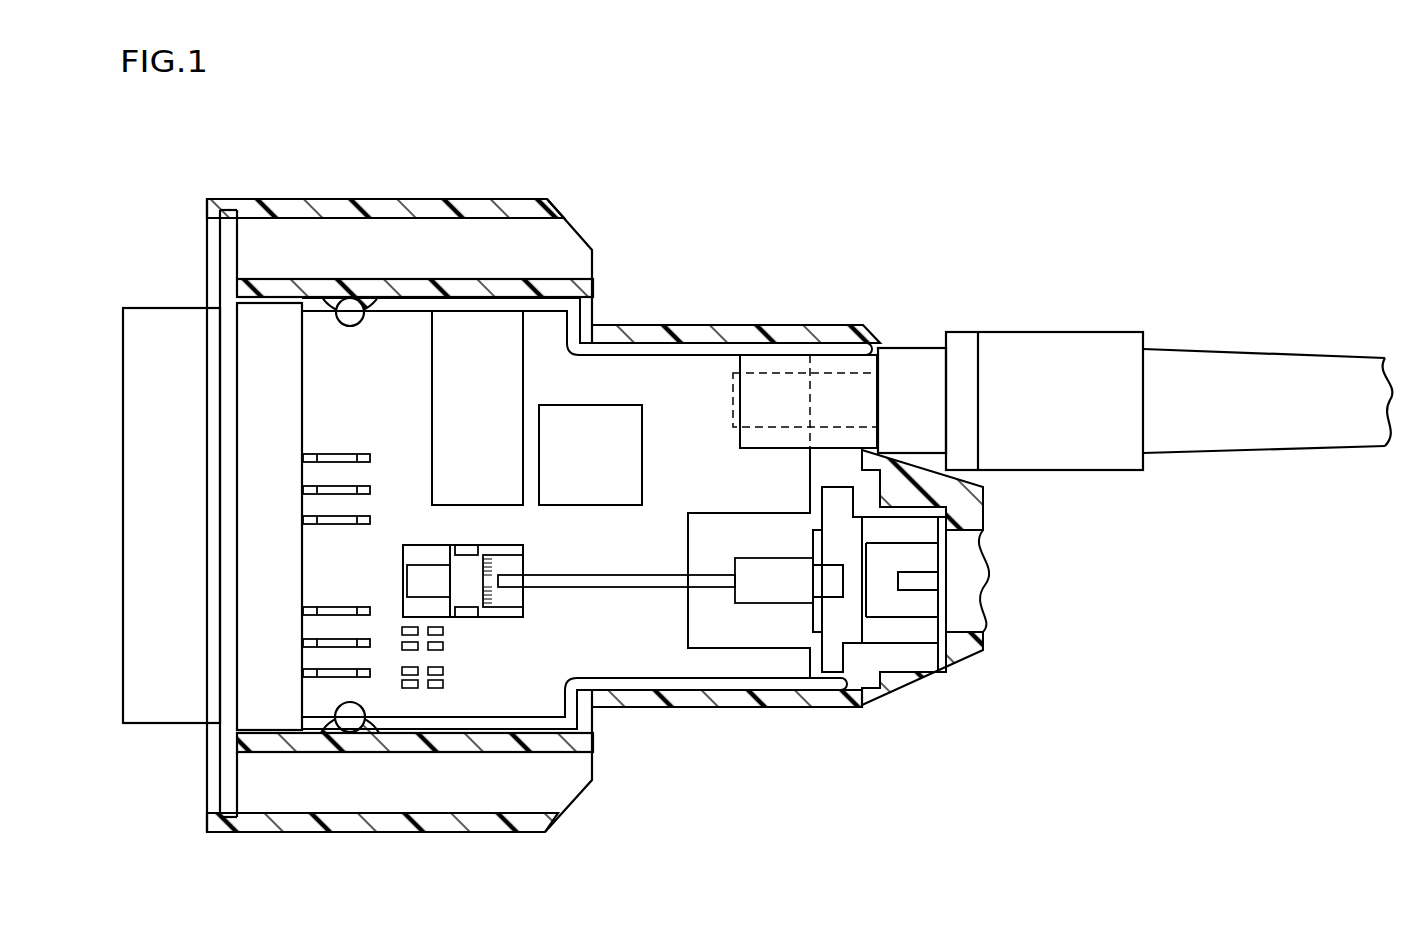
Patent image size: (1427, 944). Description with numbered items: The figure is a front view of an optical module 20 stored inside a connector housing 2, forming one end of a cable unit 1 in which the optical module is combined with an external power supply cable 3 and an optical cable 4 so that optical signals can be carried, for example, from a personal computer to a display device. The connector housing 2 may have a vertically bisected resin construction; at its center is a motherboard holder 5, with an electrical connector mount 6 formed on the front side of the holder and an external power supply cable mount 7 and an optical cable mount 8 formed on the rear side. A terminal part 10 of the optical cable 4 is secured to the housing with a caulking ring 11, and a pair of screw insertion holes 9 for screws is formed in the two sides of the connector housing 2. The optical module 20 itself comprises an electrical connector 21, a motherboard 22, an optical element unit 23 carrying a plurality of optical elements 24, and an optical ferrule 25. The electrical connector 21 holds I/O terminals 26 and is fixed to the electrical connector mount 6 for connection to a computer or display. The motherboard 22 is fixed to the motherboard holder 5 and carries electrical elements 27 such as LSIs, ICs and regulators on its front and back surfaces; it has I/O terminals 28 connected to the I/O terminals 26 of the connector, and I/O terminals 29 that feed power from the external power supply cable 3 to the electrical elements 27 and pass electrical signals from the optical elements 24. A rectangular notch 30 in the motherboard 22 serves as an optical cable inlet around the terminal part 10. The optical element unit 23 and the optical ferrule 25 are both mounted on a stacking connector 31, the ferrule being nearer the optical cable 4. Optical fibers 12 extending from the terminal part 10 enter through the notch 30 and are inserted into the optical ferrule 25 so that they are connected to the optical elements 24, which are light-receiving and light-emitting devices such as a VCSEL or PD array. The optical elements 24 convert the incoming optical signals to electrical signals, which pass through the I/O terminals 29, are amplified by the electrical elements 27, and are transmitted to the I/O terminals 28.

The cable unit 1 is at (836, 190).
The connector housing 2 is at (282, 215).
The external power supply cable 3 is at (1080, 331).
The optical cable 4 is at (965, 622).
The motherboard holder 5 is at (540, 302).
The electrical connector mount 6 is at (215, 226).
The external power supply cable mount 7 is at (880, 352).
The optical cable mount 8 is at (918, 627).
The screw insertion holes 9 is at (456, 225).
The terminal part 10 is at (765, 557).
The caulking ring 11 is at (838, 638).
The optical fibers 12 is at (577, 574).
The optical module 20 is at (643, 534).
The electrical connector 21 is at (150, 306).
The motherboard 22 is at (640, 338).
The optical element unit 23 is at (398, 534).
The optical elements 24 is at (415, 580).
The optical ferrule 25 is at (487, 548).
The I/O terminals 26 is at (305, 458).
The electrical elements 27 is at (432, 360).
The I/O terminals 28 is at (345, 453).
The I/O terminals 29 is at (445, 641).
The rectangular notch 30 is at (697, 612).
The stacking connector 31 is at (405, 555).